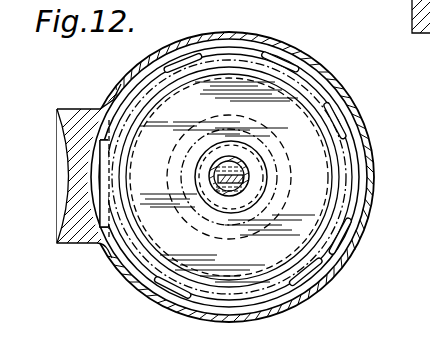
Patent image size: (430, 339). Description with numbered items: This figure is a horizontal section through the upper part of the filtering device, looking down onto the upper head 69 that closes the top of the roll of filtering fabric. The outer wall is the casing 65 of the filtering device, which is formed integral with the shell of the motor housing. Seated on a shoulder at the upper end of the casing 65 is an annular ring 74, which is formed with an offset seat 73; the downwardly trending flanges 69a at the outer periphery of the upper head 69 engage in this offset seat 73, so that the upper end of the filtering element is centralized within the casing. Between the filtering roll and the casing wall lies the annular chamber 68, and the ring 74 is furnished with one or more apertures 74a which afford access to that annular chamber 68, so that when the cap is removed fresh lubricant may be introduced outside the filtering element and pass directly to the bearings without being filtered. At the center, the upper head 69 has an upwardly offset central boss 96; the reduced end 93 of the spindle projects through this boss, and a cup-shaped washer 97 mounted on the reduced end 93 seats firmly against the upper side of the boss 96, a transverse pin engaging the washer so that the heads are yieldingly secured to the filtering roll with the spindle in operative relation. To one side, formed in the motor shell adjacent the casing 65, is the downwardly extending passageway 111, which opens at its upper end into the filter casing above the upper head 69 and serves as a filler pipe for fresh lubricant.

The apertures 74a is at (255, 58).
The offset seat 73 is at (341, 186).
The annular ring 74 is at (322, 100).
The downwardly trending flanges 69a is at (338, 163).
The annular chamber 68 is at (375, 137).
The casing 65 is at (322, 88).
The passageway 111 is at (103, 172).
The upper head 69 is at (323, 141).
The reduced end of the spindle 93 is at (218, 192).
The cup-shaped washer 97 is at (217, 166).
The central boss 96 is at (250, 166).